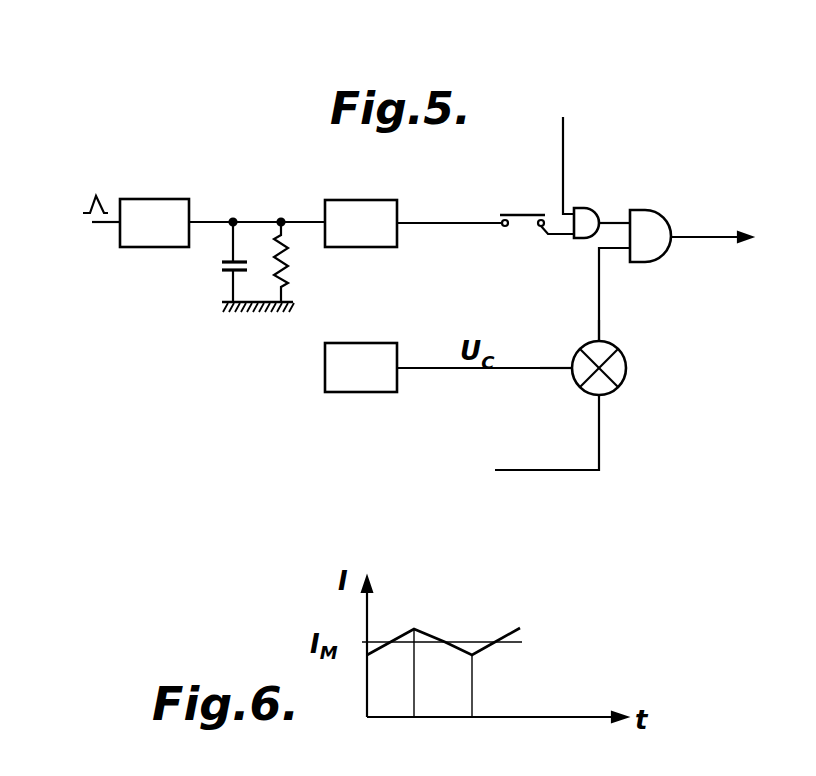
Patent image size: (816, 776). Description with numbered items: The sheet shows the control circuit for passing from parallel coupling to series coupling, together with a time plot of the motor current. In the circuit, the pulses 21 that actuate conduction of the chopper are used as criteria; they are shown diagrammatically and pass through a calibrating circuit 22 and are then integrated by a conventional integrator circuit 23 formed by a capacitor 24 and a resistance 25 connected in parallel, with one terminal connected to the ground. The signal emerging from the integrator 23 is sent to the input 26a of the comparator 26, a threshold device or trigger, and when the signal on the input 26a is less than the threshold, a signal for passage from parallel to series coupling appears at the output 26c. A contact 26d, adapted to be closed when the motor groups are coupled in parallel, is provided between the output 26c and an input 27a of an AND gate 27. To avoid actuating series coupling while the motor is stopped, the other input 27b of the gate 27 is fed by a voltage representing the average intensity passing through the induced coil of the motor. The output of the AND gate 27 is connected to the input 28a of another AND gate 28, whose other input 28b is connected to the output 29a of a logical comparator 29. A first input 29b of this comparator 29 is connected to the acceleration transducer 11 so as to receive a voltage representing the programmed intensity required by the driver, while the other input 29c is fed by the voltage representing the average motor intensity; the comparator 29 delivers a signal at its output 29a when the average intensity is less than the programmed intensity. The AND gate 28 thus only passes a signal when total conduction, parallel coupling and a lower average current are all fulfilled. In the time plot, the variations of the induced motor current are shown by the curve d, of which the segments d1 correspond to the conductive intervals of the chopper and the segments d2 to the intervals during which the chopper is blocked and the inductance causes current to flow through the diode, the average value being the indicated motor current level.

In FIG. 5, the pulses 21 is at (102, 193).
In FIG. 5, the calibrating circuit 22 is at (158, 212).
In FIG. 5, the integrator circuit 23 is at (218, 267).
In FIG. 5, the capacitor 24 is at (238, 273).
In FIG. 5, the resistance 25 is at (285, 263).
In FIG. 5, the comparator 26 is at (370, 237).
In FIG. 5, the input of comparator 26a is at (317, 221).
In FIG. 5, the output of comparator 26c is at (421, 223).
In FIG. 5, the contact 26d is at (518, 213).
In FIG. 5, the AND gate 27 is at (585, 227).
In FIG. 5, the input of AND gate 27a is at (553, 235).
In FIG. 5, the other input of AND gate 27b is at (571, 207).
In FIG. 5, the AND gate 28 is at (653, 227).
In FIG. 5, the input of AND gate 28a is at (620, 203).
In FIG. 5, the other input of AND gate 28b is at (613, 250).
In FIG. 5, the acceleration transducer 11 is at (370, 357).
In FIG. 5, the logical comparator 29 is at (618, 362).
In FIG. 5, the output of logical comparator 29a is at (584, 346).
In FIG. 5, the first input of logical comparator 29b is at (572, 372).
In FIG. 5, the other input of logical comparator 29c is at (603, 397).
In FIG. 6, the curve d is at (507, 630).
In FIG. 6, the segments d1 is at (393, 641).
In FIG. 6, the segments d2 is at (447, 641).